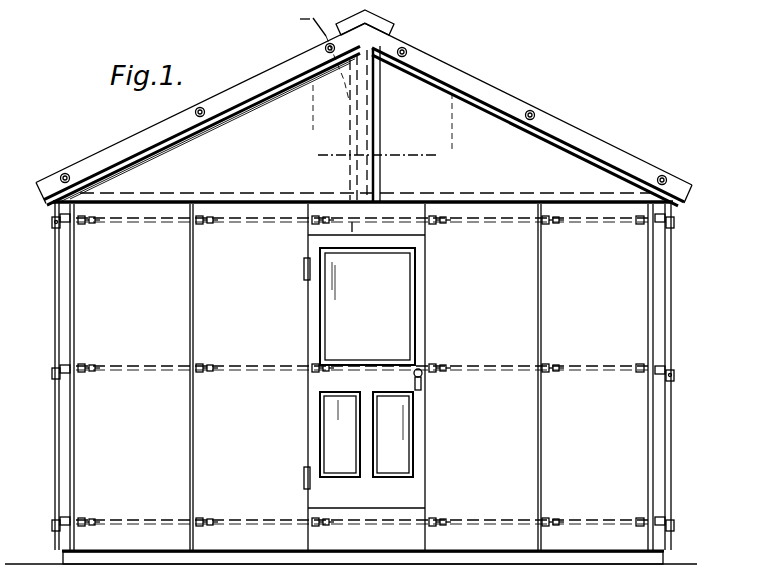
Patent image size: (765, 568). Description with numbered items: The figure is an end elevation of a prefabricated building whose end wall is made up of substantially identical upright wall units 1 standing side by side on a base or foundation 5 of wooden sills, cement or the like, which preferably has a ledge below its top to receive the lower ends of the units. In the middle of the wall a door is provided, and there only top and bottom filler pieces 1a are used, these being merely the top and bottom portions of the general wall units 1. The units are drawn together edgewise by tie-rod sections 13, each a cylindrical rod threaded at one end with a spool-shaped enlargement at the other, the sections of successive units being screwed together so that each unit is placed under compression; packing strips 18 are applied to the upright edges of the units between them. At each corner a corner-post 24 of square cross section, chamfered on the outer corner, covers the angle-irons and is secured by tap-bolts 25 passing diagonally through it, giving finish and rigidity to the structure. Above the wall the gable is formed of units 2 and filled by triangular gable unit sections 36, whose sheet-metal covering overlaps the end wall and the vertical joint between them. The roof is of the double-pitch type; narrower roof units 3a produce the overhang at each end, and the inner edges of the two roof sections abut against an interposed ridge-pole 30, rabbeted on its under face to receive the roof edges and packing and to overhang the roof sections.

The wall unit 1 is at (157, 319).
The filler piece 1a is at (397, 230).
The gable unit 2 is at (376, 126).
The narrow roof unit 3a is at (238, 92).
The base or foundation 5 is at (211, 556).
The tie-rod section 13 is at (204, 107).
The packing strip 18 is at (540, 353).
The corner-post 24 is at (65, 283).
The tap-bolt 25 is at (55, 230).
The ridge-pole 30 is at (372, 22).
The gable unit section 36 is at (363, 178).